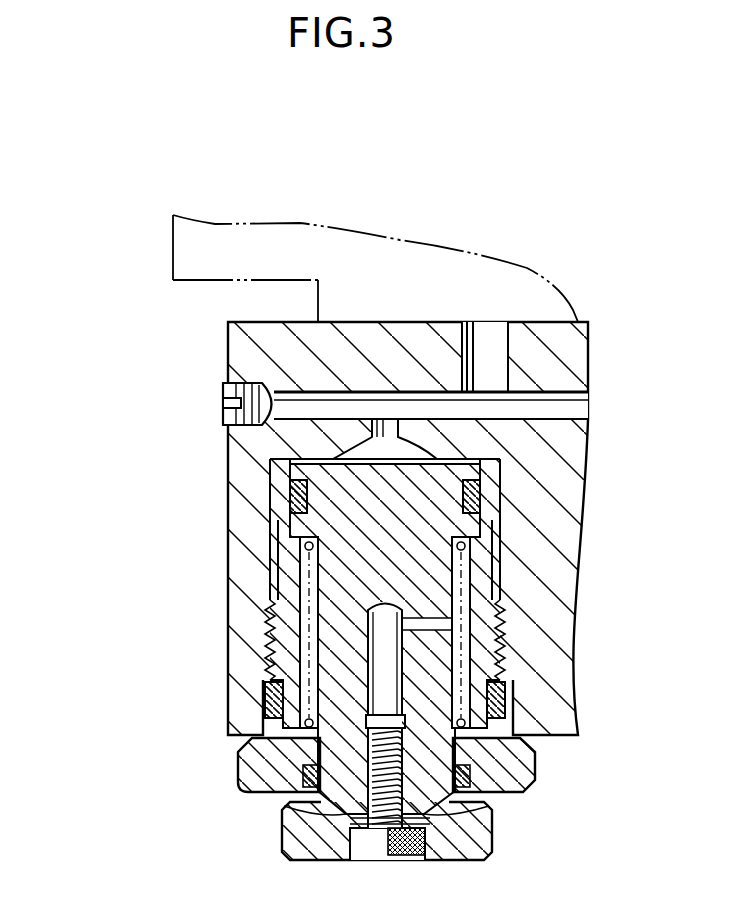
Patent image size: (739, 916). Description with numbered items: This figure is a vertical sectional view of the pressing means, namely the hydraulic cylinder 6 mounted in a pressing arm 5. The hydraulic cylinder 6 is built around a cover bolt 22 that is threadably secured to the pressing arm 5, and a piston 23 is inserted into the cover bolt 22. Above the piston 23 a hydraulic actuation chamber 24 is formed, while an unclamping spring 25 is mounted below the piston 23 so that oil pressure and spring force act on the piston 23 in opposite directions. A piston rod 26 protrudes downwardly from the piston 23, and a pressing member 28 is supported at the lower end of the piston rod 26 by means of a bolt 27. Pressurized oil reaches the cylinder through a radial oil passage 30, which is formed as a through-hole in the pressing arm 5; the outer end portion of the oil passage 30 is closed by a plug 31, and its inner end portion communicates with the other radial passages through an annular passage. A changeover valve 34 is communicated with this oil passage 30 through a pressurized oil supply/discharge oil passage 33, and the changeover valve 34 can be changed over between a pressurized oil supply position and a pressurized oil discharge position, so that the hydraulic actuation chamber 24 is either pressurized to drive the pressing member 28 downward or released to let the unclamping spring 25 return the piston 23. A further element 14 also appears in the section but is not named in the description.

The pressing arm 5 is at (227, 519).
The hydraulic cylinder 6 is at (228, 777).
The housing 14 is at (228, 590).
The cover bolt 22 is at (262, 751).
The piston 23 is at (470, 520).
The hydraulic actuation chamber 24 is at (407, 460).
The unclamping spring 25 is at (460, 556).
The piston rod 26 is at (438, 690).
The bolt 27 is at (388, 856).
The pressing member 28 is at (495, 822).
The radial oil passage 30 is at (584, 407).
The plug 31 is at (222, 394).
The pressurized oil supply/discharge oil passage 33 is at (487, 335).
The changeover valve 34 is at (173, 259).